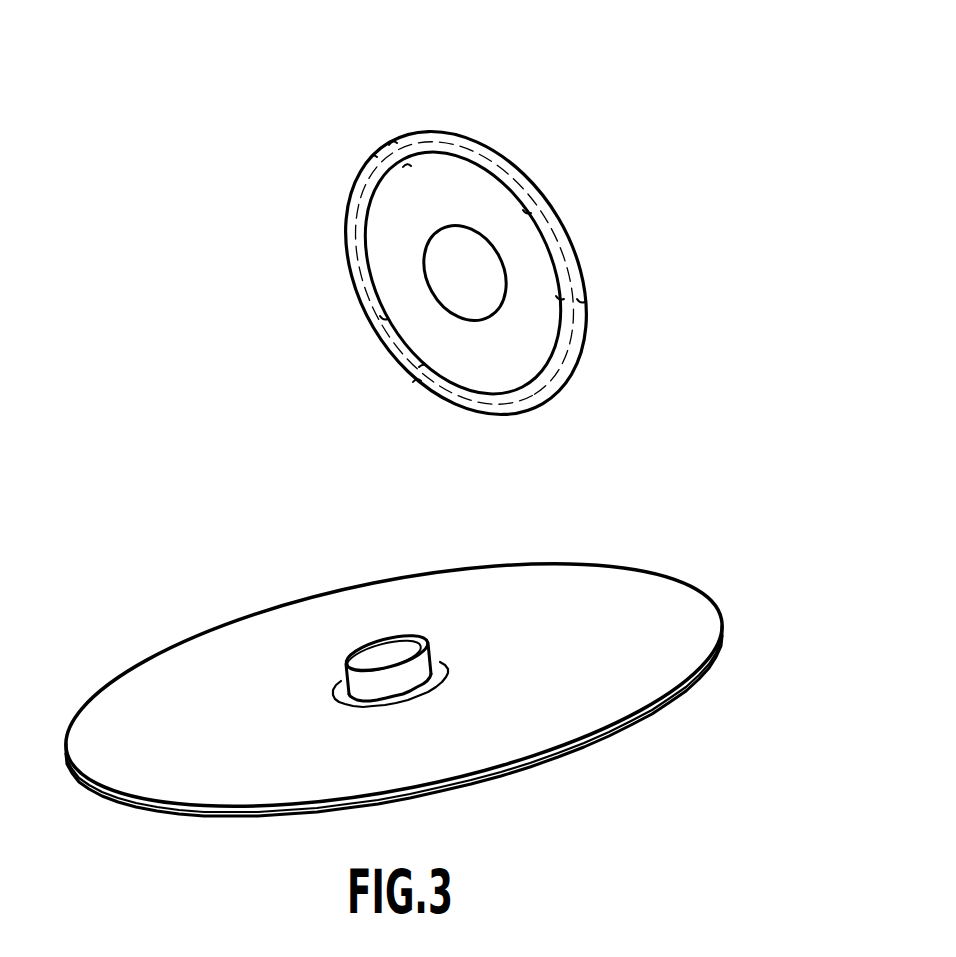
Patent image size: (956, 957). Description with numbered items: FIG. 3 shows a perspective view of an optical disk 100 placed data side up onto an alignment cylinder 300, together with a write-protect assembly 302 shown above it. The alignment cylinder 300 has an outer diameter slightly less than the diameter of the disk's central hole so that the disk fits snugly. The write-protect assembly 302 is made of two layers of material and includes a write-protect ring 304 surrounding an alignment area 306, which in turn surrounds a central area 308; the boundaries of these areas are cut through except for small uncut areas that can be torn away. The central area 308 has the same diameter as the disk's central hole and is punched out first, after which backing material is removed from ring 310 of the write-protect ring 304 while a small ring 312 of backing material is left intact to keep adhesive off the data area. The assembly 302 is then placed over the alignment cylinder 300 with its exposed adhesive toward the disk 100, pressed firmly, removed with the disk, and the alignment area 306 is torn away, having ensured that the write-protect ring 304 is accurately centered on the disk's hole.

The optical disk 100 is at (721, 608).
The alignment cylinder 300 is at (401, 658).
The write-protect assembly 302 is at (388, 352).
The write-protect ring 304 is at (505, 167).
The alignment area 306 is at (385, 212).
The central area 308 is at (426, 270).
The ring 310 is at (385, 170).
The small ring of backing material 312 is at (431, 133).